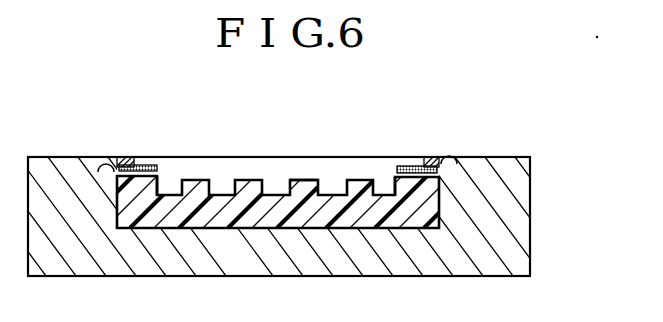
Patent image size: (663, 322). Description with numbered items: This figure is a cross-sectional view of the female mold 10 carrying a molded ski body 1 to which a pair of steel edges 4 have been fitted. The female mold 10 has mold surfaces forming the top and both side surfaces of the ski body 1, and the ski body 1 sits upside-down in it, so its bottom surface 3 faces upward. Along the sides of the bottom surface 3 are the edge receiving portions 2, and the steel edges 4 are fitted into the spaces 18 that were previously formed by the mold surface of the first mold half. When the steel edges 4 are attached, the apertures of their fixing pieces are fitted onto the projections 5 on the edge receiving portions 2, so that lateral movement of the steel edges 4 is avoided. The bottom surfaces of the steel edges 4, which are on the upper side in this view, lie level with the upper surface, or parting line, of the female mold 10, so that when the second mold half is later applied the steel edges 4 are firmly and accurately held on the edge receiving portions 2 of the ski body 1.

The ski body 1 is at (358, 214).
The edge receiving portions 2 is at (160, 177).
The bottom surface 3 is at (286, 193).
The steel edges 4 is at (104, 168).
The projections 5 is at (134, 159).
The female mold 10 is at (475, 245).
The spaces 18 is at (155, 164).